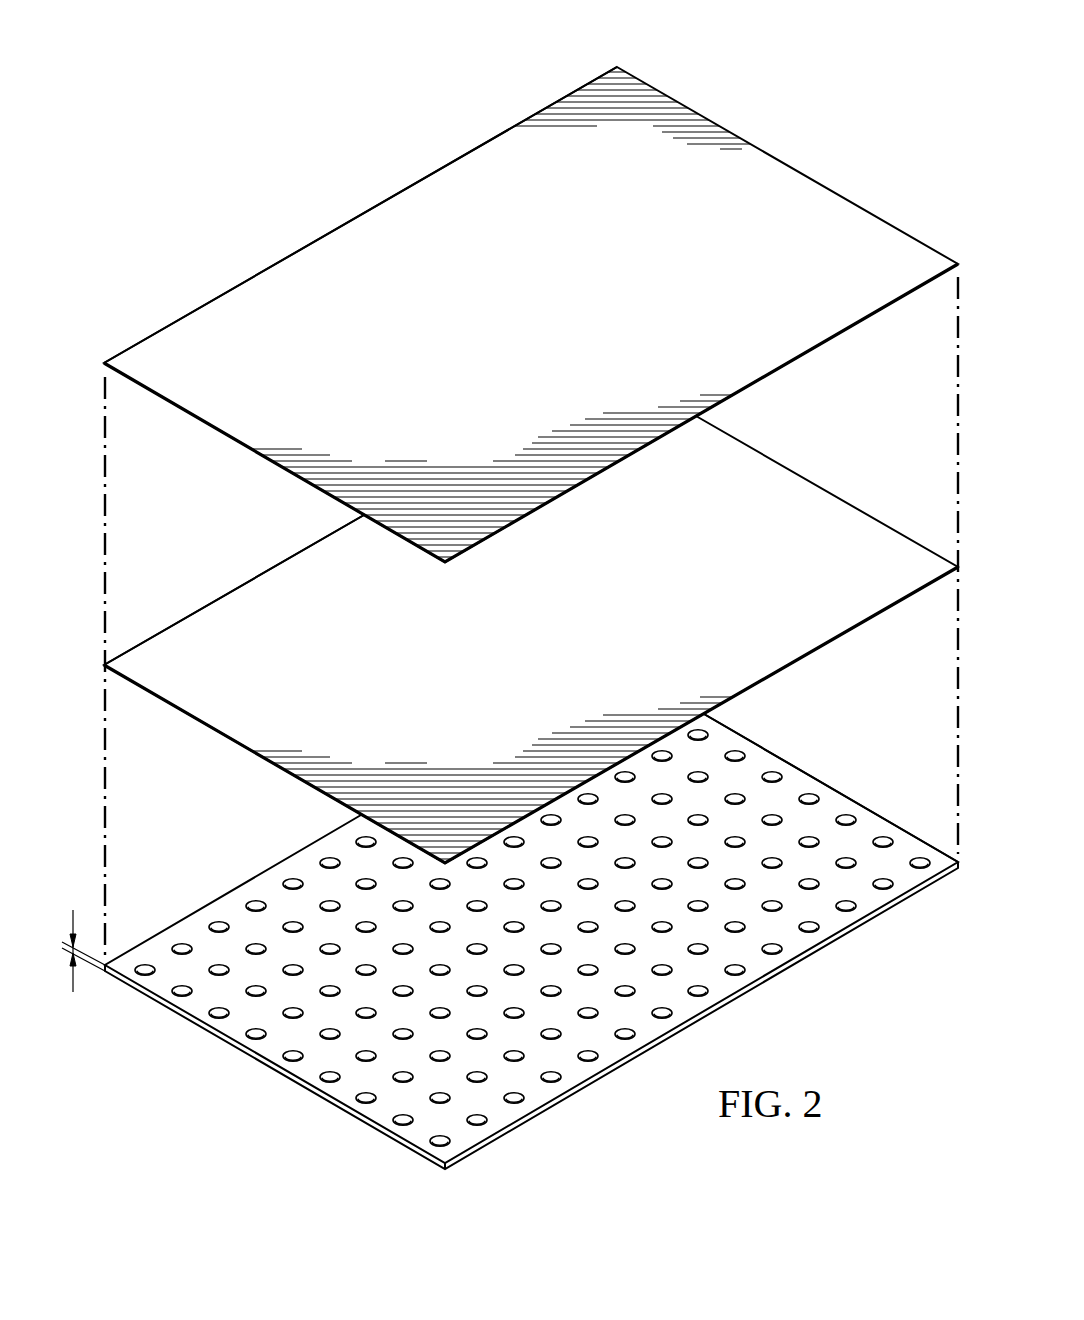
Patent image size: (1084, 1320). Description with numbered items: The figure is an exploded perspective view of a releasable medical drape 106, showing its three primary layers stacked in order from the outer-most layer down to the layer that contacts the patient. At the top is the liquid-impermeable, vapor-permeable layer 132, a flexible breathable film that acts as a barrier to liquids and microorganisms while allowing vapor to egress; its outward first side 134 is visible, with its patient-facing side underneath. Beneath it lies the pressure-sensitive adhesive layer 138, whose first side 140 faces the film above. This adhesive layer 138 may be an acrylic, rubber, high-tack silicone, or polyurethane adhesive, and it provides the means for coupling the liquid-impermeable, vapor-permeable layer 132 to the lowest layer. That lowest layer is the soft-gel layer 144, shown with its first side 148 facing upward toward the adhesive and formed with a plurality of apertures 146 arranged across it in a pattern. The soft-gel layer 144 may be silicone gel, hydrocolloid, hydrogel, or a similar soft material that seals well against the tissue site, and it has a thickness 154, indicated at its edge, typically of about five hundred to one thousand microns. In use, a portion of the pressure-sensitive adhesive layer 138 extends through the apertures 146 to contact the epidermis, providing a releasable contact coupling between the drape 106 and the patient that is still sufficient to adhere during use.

The releasable medical drape 106 is at (163, 246).
The liquid-impermeable, vapor-permeable layer 132 is at (812, 124).
The first side 134 is at (305, 256).
The pressure-sensitive adhesive layer 138 is at (815, 437).
The first side 140 is at (215, 612).
The soft-gel layer 144 is at (266, 1110).
The apertures 146 is at (770, 778).
The first side 148 is at (833, 802).
The thickness 154 is at (63, 947).